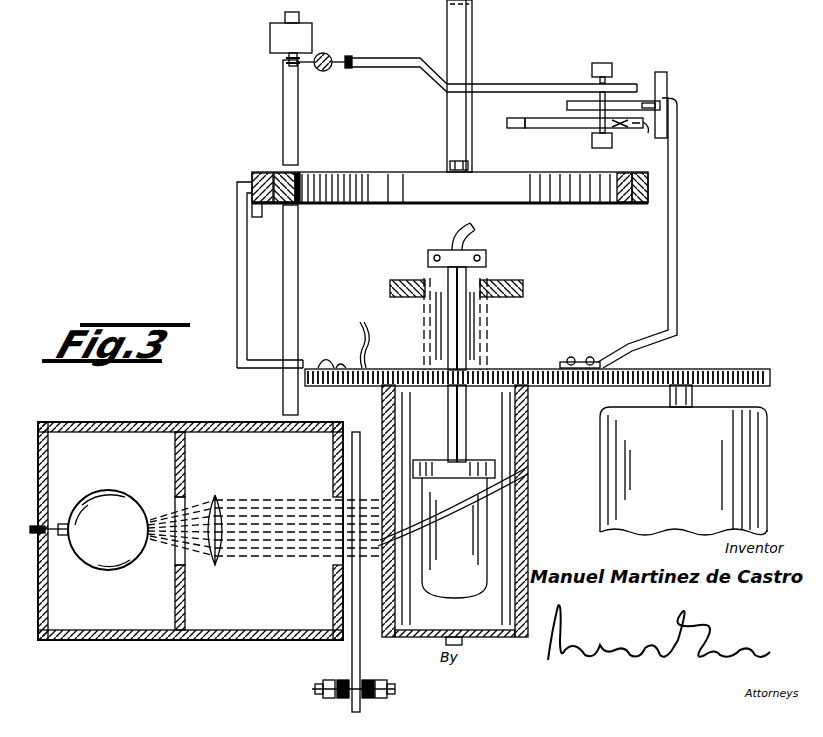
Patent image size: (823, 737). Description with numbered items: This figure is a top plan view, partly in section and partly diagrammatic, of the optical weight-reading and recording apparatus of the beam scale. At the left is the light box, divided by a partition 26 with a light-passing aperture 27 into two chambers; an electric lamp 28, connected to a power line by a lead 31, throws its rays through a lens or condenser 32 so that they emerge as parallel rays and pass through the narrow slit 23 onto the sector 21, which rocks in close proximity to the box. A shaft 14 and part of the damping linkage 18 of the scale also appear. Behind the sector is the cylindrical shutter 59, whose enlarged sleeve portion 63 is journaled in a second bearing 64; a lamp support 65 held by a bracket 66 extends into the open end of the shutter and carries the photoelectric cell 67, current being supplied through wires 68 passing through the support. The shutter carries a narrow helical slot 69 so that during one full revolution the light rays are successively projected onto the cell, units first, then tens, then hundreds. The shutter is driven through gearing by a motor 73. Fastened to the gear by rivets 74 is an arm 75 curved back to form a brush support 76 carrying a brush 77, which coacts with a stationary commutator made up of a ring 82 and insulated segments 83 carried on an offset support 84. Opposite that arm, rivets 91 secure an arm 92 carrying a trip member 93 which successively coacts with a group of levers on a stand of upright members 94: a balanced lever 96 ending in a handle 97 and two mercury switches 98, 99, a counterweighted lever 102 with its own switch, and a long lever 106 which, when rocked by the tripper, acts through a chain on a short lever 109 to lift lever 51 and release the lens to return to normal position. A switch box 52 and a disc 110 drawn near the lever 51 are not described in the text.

The shaft 14 is at (395, 689).
The linkage 18 is at (372, 365).
The sector 21 is at (352, 640).
The slit 23 is at (333, 497).
The partition 26 is at (185, 608).
The light-passing aperture 27 is at (175, 500).
The electric lamp 28 is at (120, 540).
The lead 31 is at (68, 535).
The lens or condenser 32 is at (220, 497).
The lever 51 is at (283, 125).
The switch box 52 is at (270, 35).
The cylindrical shutter 59 is at (530, 535).
The enlarged sleeve portion 63 is at (490, 350).
The second bearing 64 is at (523, 288).
The lamp support 65 is at (468, 330).
The bracket 66 is at (435, 250).
The photoelectric cell 67 is at (444, 541).
The wires 68 is at (470, 223).
The helical slot 69 is at (528, 470).
The motor 73 is at (670, 486).
The rivets 74 is at (328, 362).
The arm 75 is at (250, 370).
The brush support 76 is at (237, 182).
The brush 77 is at (256, 217).
The ring 82 is at (612, 208).
The segments 83 is at (640, 208).
The support 84 is at (470, 72).
The rivets 91 is at (572, 358).
The arm 92 is at (680, 225).
The trip member 93 is at (667, 90).
The upright members 94 is at (612, 65).
The lever 96 is at (566, 128).
The handle 97 is at (512, 128).
The mercury switch 98 is at (648, 134).
The mercury switch 99 is at (618, 128).
The lever 102 is at (567, 105).
The long lever 106 is at (518, 86).
The short lever 109 is at (330, 72).
The disc 110 is at (330, 55).